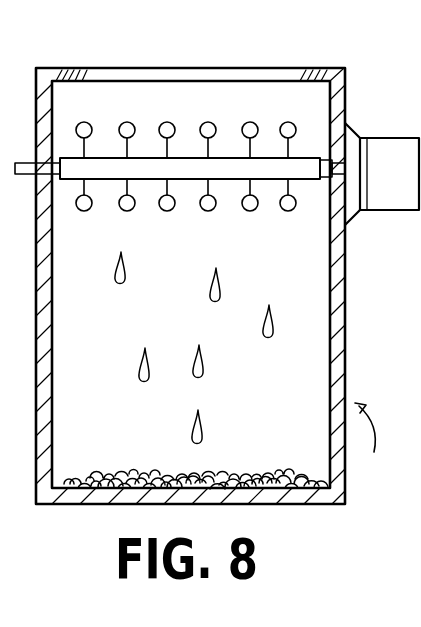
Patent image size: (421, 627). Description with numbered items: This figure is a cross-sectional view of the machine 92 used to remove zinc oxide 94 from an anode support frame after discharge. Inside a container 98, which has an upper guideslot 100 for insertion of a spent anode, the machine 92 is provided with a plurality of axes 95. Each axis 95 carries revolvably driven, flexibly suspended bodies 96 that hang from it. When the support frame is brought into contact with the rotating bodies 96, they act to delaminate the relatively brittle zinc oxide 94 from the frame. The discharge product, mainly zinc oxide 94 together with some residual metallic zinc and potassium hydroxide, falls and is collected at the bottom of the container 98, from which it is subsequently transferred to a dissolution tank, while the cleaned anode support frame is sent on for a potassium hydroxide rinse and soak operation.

The machine 92 is at (375, 455).
The zinc oxide 94 is at (258, 470).
The axes 95 is at (188, 180).
The flexibly suspended bodies 96 is at (128, 122).
The container 98 is at (340, 312).
The upper guideslot 100 is at (263, 72).